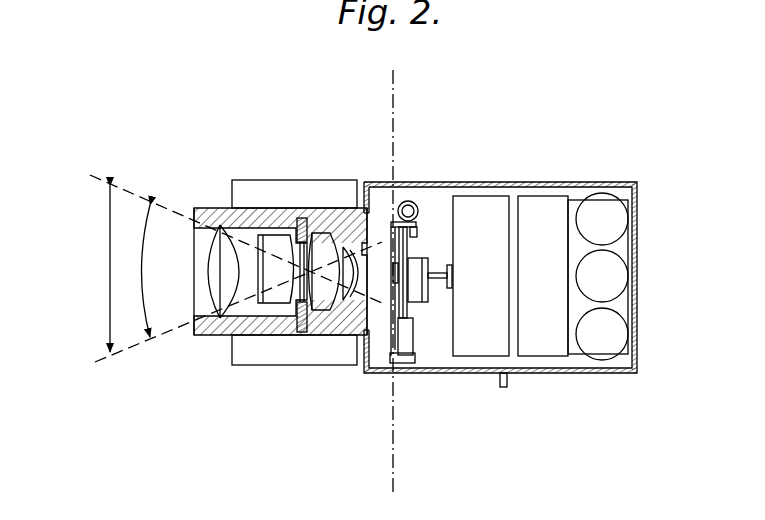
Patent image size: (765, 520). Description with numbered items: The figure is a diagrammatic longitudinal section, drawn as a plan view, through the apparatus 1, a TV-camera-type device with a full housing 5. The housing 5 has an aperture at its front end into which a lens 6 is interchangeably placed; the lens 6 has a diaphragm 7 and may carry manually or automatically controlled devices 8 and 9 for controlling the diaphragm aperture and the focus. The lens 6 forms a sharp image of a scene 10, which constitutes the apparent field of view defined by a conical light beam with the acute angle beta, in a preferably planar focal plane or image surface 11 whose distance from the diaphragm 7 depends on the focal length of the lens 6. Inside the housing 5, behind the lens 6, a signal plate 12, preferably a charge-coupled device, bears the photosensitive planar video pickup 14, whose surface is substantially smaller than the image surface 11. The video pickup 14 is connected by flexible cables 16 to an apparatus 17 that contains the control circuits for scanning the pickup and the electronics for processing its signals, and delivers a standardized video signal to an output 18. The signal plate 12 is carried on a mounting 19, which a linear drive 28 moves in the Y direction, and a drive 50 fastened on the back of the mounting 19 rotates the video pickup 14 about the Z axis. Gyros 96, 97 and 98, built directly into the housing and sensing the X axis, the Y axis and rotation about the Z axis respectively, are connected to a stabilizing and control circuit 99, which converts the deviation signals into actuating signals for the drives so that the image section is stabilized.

The apparatus 1 is at (345, 178).
The housing 5 is at (466, 345).
The lens 6 is at (206, 337).
The diaphragm 7 is at (292, 332).
The control device 8 is at (258, 190).
The control device 9 is at (298, 360).
The scene 10 is at (108, 268).
The image surface 11 is at (394, 455).
The signal plate 12 is at (383, 190).
The video pickup 14 is at (392, 360).
The flexible cables 16 is at (437, 350).
The apparatus 17 is at (493, 200).
The output 18 is at (508, 383).
The mounting 19 is at (420, 235).
The linear drive 28 is at (410, 200).
The drive 50 is at (430, 258).
The gyro 96 is at (614, 220).
The gyro 97 is at (614, 275).
The gyro 98 is at (614, 338).
The stabilizing and control circuit 99 is at (540, 200).